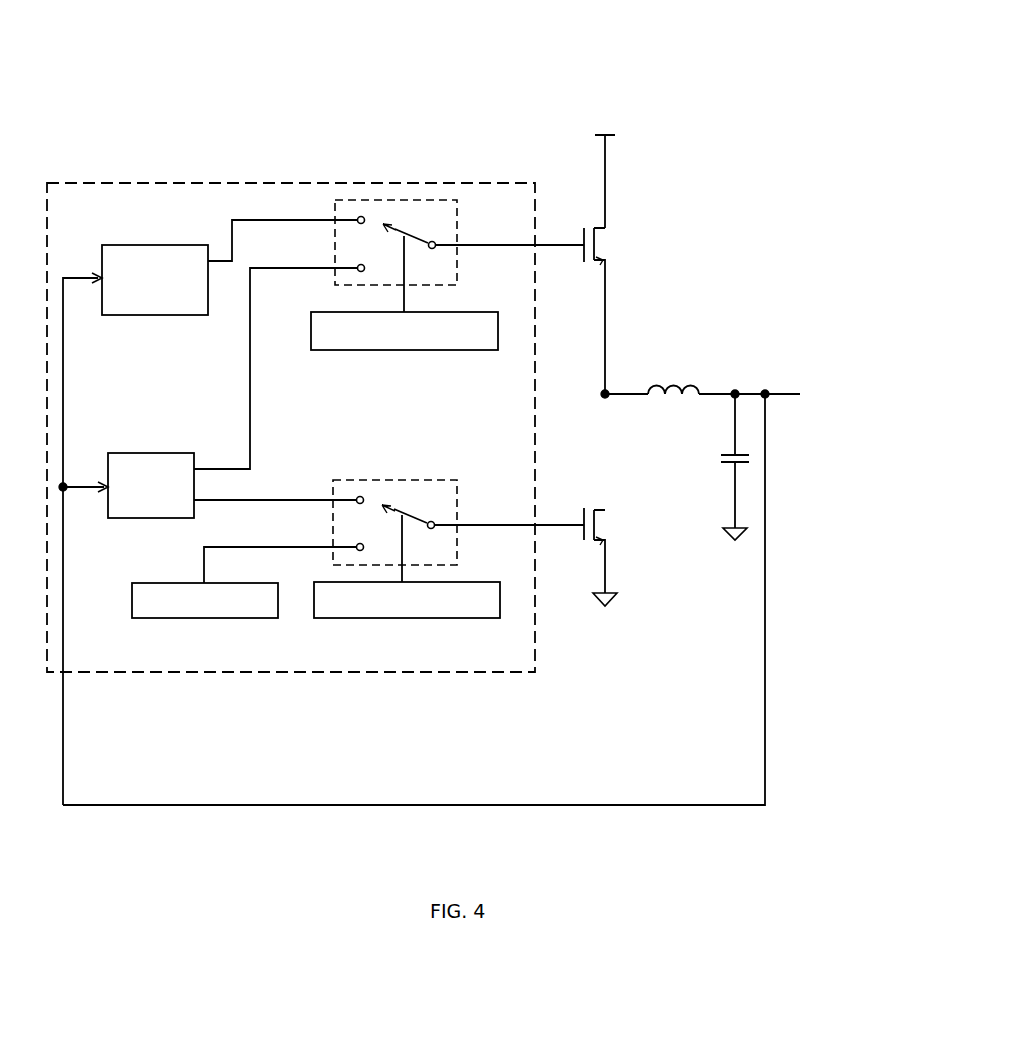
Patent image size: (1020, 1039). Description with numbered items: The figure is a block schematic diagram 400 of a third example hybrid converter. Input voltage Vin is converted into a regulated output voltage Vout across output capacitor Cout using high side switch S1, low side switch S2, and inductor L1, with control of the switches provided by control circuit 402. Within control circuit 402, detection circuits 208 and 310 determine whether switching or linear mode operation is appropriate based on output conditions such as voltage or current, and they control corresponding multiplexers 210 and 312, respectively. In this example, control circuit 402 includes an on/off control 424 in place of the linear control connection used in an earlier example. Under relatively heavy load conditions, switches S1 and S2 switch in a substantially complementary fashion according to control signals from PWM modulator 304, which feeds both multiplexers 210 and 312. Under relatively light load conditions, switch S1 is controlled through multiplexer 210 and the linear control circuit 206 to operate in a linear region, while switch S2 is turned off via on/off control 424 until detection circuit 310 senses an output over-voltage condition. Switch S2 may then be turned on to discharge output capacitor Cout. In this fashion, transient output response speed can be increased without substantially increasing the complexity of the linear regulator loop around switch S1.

The block schematic diagram 400 is at (780, 18).
The control circuit 402 is at (315, 462).
The linear control circuit 206 is at (155, 280).
The detection circuit 208 is at (404, 331).
The multiplexer 210 is at (377, 208).
The PWM modulator 304 is at (151, 485).
The detection circuit 310 is at (407, 600).
The multiplexer 312 is at (425, 493).
The on/off control 424 is at (205, 600).
The high side switch S1 is at (600, 246).
The low side switch S2 is at (600, 522).
The inductor L1 is at (680, 380).
The output capacitor Cout is at (721, 458).
The input voltage Vin is at (605, 165).
The output voltage Vout is at (828, 395).